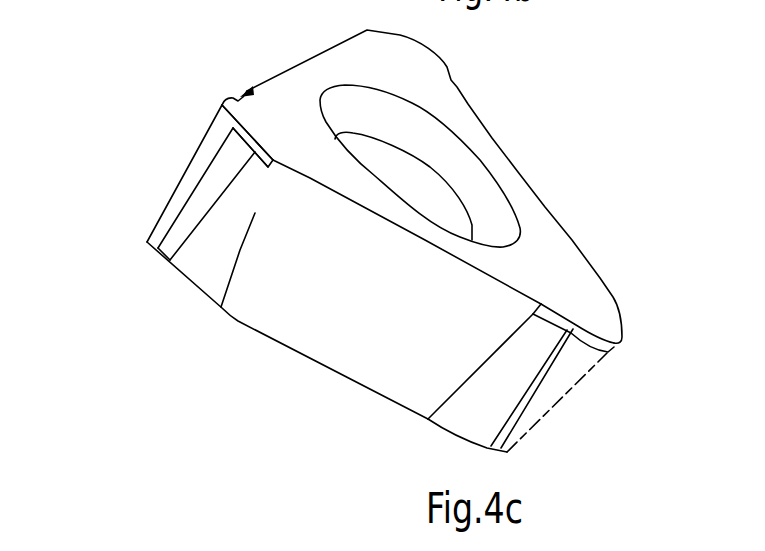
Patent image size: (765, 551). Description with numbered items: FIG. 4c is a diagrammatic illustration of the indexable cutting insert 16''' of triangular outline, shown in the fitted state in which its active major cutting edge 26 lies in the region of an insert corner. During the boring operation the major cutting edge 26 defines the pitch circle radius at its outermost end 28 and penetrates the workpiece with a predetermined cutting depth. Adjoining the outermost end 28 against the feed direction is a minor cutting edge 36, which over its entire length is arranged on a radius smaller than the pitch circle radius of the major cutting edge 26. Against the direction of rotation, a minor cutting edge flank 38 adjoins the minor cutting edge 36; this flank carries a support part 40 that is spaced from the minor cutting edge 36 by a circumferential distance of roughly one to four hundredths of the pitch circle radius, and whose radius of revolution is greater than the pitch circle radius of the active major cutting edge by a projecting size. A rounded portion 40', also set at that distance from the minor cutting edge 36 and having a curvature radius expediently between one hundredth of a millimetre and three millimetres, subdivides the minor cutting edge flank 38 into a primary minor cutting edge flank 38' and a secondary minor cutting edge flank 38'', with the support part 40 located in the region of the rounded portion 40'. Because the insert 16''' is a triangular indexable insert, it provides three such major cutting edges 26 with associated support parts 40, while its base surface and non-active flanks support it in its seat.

The cutting insert 16''' is at (412, 241).
The active major cutting edge 26 is at (222, 105).
The outermost end of the active major cutting edge 28 is at (233, 128).
The minor cutting edge 36 is at (255, 213).
The minor cutting edge flank 38 is at (156, 206).
The primary minor cutting edge flank 38' is at (283, 81).
The secondary minor cutting edge flank 38'' is at (209, 333).
The support part 40 is at (302, 202).
The rounded portion 40' is at (250, 160).